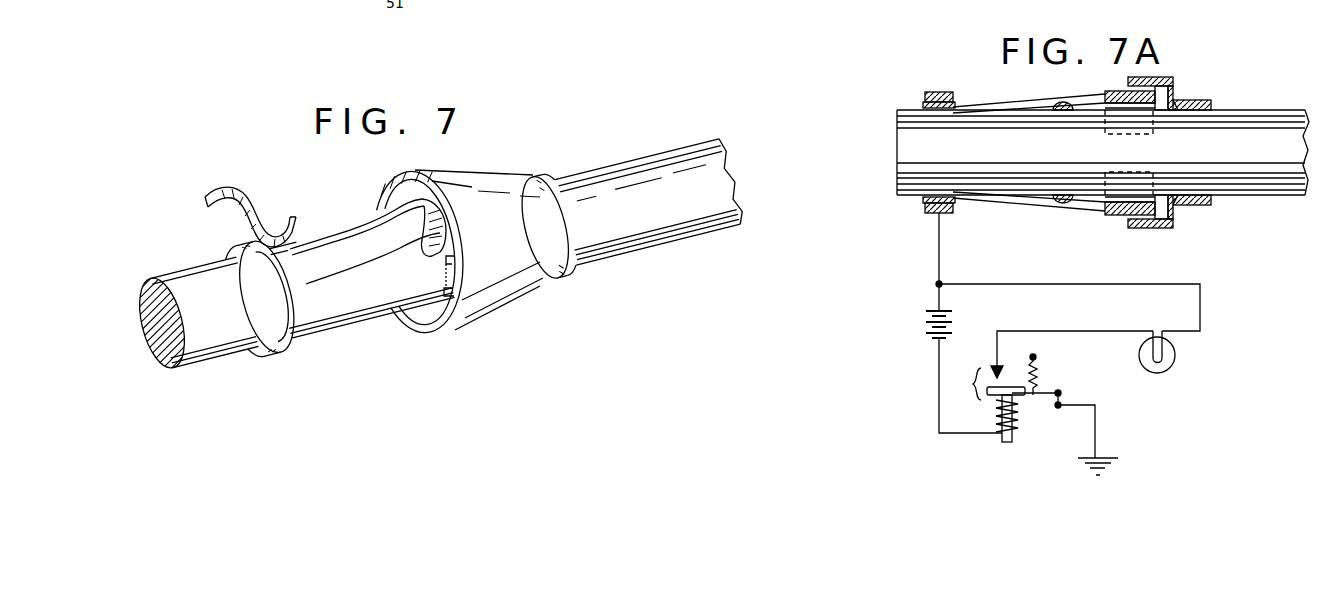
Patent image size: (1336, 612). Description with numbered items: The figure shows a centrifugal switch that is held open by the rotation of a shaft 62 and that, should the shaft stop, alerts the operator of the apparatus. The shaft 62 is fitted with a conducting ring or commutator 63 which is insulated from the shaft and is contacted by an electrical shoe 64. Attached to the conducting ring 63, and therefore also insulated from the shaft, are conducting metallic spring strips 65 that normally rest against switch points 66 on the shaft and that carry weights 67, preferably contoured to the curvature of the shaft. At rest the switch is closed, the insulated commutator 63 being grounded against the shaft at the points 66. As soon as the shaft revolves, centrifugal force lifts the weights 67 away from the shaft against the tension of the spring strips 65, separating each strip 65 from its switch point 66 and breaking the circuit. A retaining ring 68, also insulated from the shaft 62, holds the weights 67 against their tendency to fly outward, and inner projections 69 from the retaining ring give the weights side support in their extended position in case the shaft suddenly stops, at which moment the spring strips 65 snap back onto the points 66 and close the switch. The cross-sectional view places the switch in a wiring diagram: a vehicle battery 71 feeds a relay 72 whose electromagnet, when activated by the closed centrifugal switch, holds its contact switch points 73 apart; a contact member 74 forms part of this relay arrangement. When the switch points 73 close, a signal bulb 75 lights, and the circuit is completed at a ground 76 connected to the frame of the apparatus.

In FIG. 7, the shaft 62 is at (348, 303).
In FIG. 7A, the shaft 62 is at (1249, 128).
In FIG. 7, the conducting ring 63 is at (291, 337).
In FIG. 7A, the conducting ring 63 is at (940, 92).
In FIG. 7, the electrical shoe 64 is at (238, 207).
In FIG. 7, the spring strips 65 is at (360, 240).
In FIG. 7A, the spring strips 65 is at (1024, 103).
In FIG. 7A, the switch points 66 is at (1062, 102).
In FIG. 7, the weights 67 is at (438, 294).
In FIG. 7A, the weights 67 is at (1116, 91).
In FIG. 7, the retaining ring 68 is at (467, 315).
In FIG. 7A, the retaining ring 68 is at (1150, 78).
In FIG. 7, the inner projections 69 is at (453, 269).
In FIG. 7A, the vehicle battery 71 is at (925, 322).
In FIG. 7A, the relay 72 is at (1016, 428).
In FIG. 7A, the contact switch points 73 is at (972, 384).
In FIG. 7A, the contact spring 74 is at (1040, 378).
In FIG. 7A, the signal bulb 75 is at (1176, 354).
In FIG. 7A, the ground 76 is at (1104, 458).